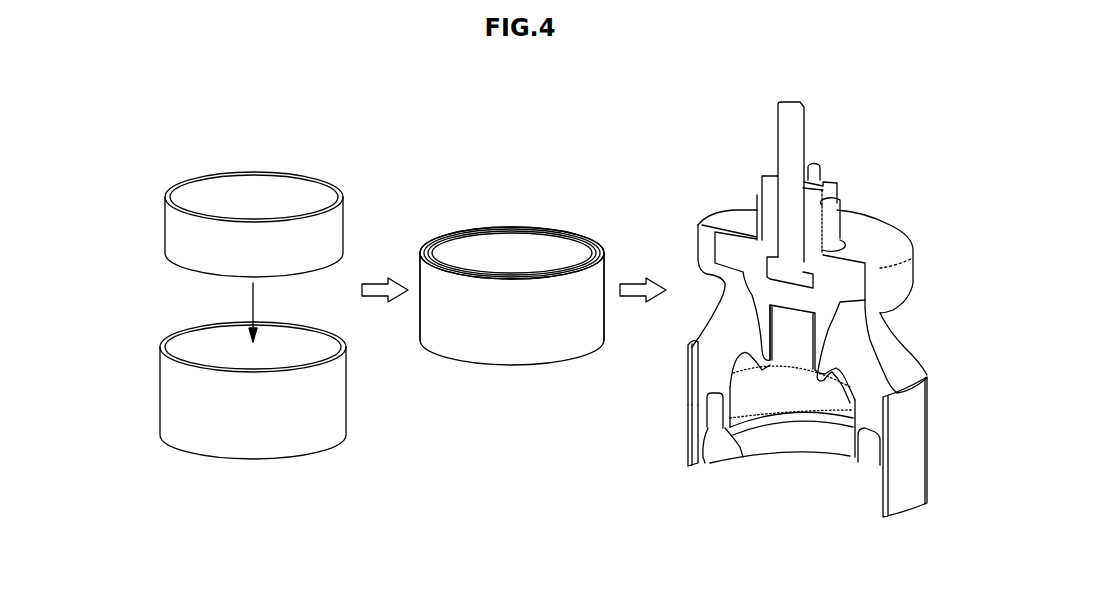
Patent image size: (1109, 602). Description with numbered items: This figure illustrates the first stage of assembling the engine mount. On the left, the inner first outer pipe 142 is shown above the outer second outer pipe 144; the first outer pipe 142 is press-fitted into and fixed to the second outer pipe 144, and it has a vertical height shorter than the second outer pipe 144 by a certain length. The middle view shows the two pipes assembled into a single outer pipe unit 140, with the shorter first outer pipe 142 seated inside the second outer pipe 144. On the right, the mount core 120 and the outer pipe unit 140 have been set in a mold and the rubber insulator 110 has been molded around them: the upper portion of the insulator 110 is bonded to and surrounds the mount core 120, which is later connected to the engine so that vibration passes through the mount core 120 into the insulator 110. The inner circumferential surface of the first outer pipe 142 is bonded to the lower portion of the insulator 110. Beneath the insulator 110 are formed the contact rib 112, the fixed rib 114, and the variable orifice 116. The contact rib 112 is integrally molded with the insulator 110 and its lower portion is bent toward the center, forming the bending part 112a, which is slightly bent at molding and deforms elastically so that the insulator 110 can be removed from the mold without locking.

The insulator 110 is at (898, 228).
The contact rib 112 is at (730, 415).
The bending part 112a is at (732, 432).
The fixed rib 114 is at (708, 460).
The variable orifice 116 is at (867, 470).
The mount core 120 is at (843, 277).
The outer pipe unit 140 is at (397, 174).
The first outer pipe 142 is at (168, 223).
The second outer pipe 144 is at (168, 393).